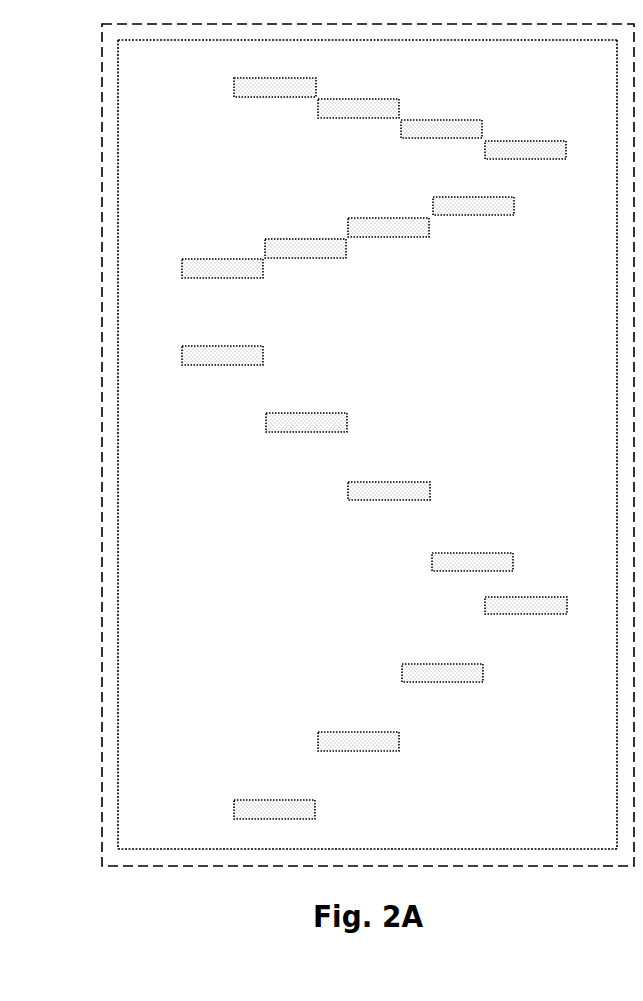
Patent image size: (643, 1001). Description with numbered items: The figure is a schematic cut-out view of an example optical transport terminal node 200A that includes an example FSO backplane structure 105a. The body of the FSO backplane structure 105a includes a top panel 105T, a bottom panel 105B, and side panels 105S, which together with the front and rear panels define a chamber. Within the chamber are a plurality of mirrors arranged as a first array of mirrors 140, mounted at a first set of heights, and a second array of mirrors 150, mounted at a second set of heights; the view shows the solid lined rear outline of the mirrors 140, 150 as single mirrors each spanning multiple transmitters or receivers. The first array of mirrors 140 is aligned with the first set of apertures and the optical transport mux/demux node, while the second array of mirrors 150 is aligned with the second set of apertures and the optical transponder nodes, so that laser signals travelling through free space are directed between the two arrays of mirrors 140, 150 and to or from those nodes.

The optical transport terminal node 200A is at (225, 886).
The FSO backplane structure 105a is at (367, 444).
The top panel 105T is at (126, 46).
The side panels 105S is at (124, 299).
The bottom panel 105B is at (467, 841).
The first array of mirrors 140 is at (178, 78).
The second array of mirrors 150 is at (178, 343).